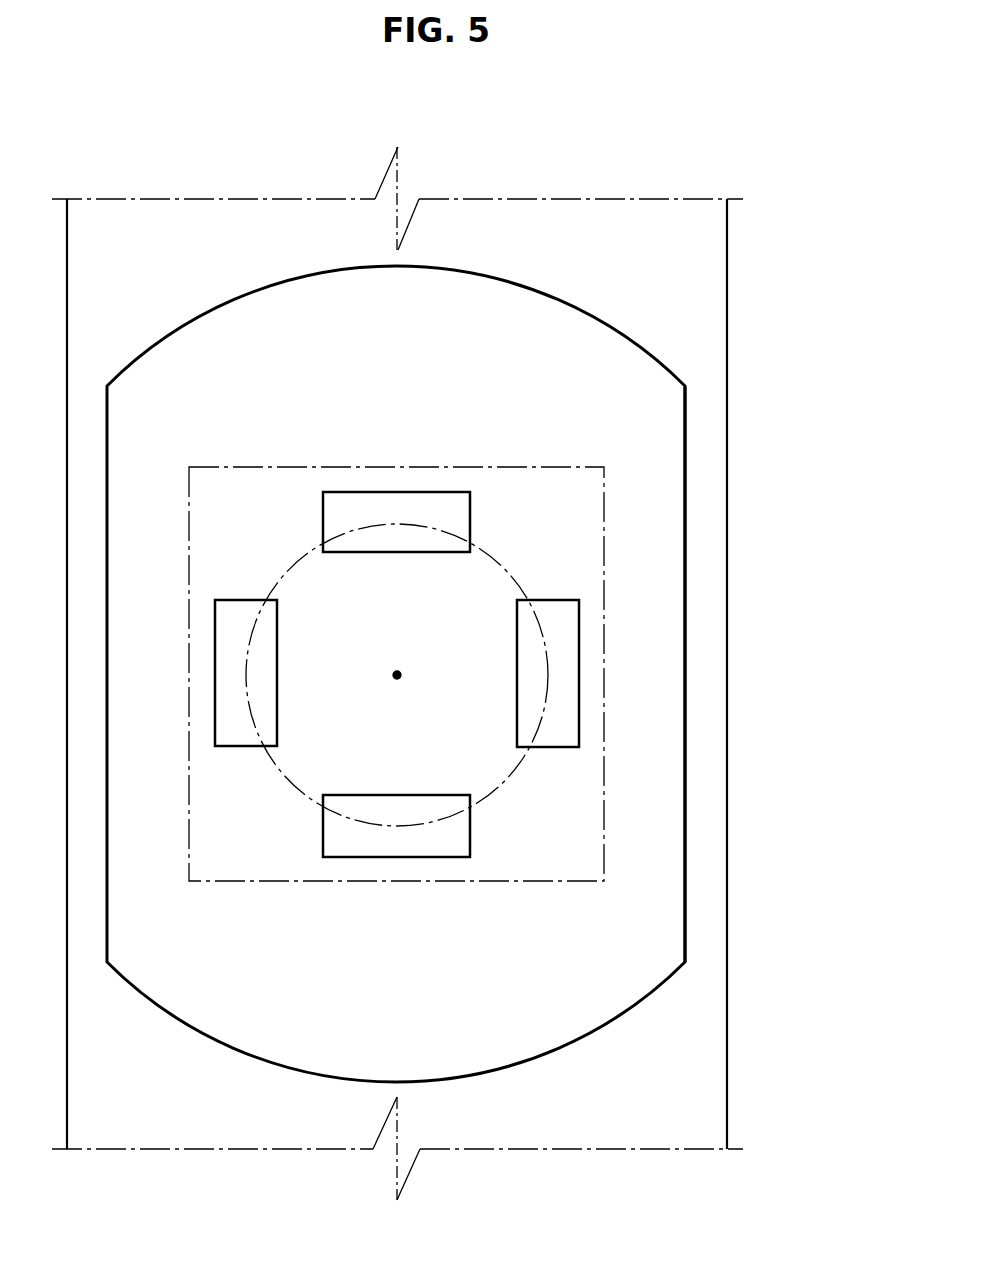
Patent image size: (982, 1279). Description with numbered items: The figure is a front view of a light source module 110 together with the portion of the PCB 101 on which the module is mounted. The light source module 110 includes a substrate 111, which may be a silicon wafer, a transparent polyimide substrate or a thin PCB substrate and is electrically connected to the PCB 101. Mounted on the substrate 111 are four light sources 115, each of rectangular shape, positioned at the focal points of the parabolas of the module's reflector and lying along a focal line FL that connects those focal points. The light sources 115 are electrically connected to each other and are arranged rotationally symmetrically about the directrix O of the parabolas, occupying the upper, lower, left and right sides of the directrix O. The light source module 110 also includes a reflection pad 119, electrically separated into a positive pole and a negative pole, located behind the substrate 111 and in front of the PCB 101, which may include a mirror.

The PCB 101 is at (703, 253).
The light source module 110 is at (690, 367).
The reflection pad 119 is at (678, 898).
The substrate 111 is at (604, 812).
The focal line FL is at (520, 572).
The light sources 115 is at (568, 689).
The directrix O is at (407, 662).